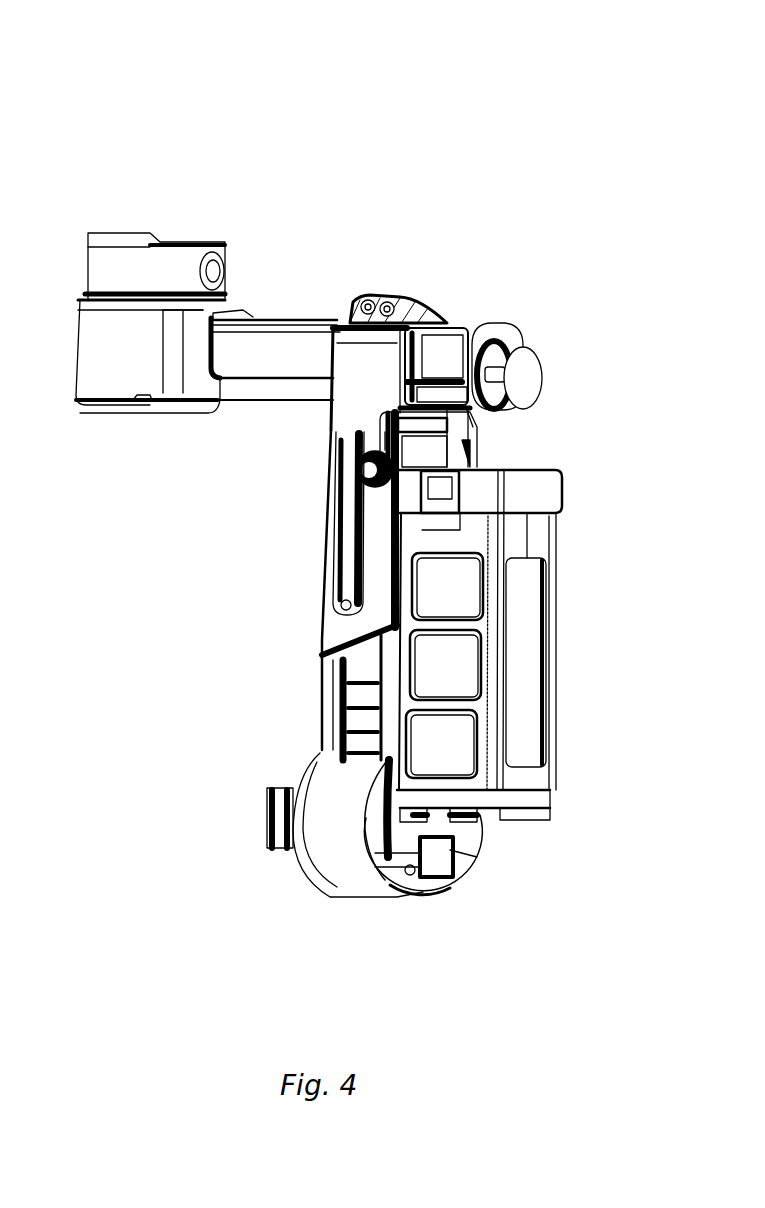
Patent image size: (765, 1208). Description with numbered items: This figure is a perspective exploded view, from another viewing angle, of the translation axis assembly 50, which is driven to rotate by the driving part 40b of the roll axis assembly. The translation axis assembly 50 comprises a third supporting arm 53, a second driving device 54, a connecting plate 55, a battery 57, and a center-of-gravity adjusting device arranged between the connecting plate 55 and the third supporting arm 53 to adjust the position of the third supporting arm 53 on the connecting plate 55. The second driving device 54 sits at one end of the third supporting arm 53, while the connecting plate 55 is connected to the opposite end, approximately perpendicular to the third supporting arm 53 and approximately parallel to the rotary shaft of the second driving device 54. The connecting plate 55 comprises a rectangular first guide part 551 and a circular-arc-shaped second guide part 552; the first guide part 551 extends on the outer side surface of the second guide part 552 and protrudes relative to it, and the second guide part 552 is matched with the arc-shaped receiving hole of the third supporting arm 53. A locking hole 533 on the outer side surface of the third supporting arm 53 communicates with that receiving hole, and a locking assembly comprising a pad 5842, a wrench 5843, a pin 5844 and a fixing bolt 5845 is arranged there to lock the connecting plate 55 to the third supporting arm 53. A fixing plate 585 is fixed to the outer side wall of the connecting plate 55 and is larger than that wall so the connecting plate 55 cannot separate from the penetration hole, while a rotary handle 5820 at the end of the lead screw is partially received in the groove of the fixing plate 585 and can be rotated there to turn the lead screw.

The translation axis assembly 50 is at (300, 36).
The driving part 40b is at (118, 373).
The connecting plate 55 is at (253, 600).
The first guide part 551 is at (249, 383).
The second guide part 552 is at (285, 350).
The locking hole 533 is at (338, 338).
The fixing bolt 5845 is at (385, 292).
The pin 5844 is at (410, 291).
The wrench 5843 is at (407, 305).
The fixing plate 585 is at (490, 323).
The rotary handle 5820 is at (523, 376).
The pad 5842 is at (385, 292).
The third supporting arm 53 is at (322, 643).
The battery 57 is at (540, 535).
The second driving device 54 is at (323, 847).